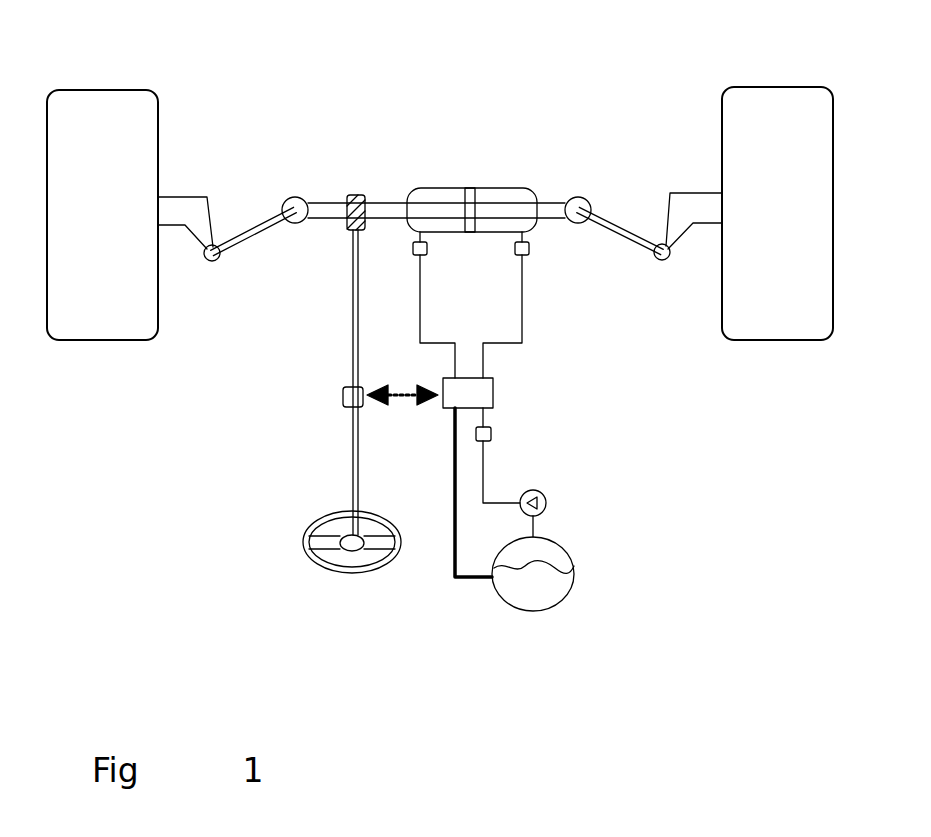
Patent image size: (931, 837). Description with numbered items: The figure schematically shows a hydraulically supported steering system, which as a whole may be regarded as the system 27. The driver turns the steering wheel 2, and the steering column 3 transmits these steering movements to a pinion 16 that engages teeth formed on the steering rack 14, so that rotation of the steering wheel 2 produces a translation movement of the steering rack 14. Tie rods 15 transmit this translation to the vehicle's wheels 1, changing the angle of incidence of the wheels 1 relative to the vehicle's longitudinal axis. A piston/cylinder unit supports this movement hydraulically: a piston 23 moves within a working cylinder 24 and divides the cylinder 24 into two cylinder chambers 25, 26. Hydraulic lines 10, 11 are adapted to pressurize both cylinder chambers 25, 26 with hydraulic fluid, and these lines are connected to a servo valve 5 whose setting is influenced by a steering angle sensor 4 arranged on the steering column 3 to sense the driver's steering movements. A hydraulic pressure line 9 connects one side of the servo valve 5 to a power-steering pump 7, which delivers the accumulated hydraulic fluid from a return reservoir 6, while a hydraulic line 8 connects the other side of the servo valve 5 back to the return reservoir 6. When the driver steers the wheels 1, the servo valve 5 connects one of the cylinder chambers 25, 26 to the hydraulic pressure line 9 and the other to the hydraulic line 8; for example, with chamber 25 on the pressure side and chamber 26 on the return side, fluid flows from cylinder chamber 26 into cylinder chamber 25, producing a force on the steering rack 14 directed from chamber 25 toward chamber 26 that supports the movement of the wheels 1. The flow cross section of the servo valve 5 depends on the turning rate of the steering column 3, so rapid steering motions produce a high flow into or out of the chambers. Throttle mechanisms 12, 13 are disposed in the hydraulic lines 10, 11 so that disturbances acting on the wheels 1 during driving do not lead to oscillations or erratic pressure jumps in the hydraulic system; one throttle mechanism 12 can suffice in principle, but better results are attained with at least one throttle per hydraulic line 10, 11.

The wheels 1 is at (98, 123).
The steering wheel 2 is at (315, 560).
The steering column 3 is at (352, 465).
The steering angle sensor 4 is at (343, 393).
The servo valve 5 is at (468, 395).
The return reservoir 6 is at (553, 590).
The power-steering pump 7 is at (546, 500).
The hydraulic line 8 is at (470, 582).
The hydraulic pressure line 9 is at (487, 468).
The hydraulic line 10 is at (418, 285).
The hydraulic line 11 is at (527, 283).
The throttle mechanism 12 is at (413, 248).
The throttle mechanism 13 is at (529, 248).
The steering rack 14 is at (322, 208).
The tie rods 15 is at (247, 235).
The pinion 16 is at (355, 190).
The piston 23 is at (470, 197).
The working cylinder 24 is at (517, 190).
The cylinder chamber 25 is at (435, 195).
The cylinder chamber 26 is at (498, 193).
The hydraulic steering system 27 is at (627, 415).